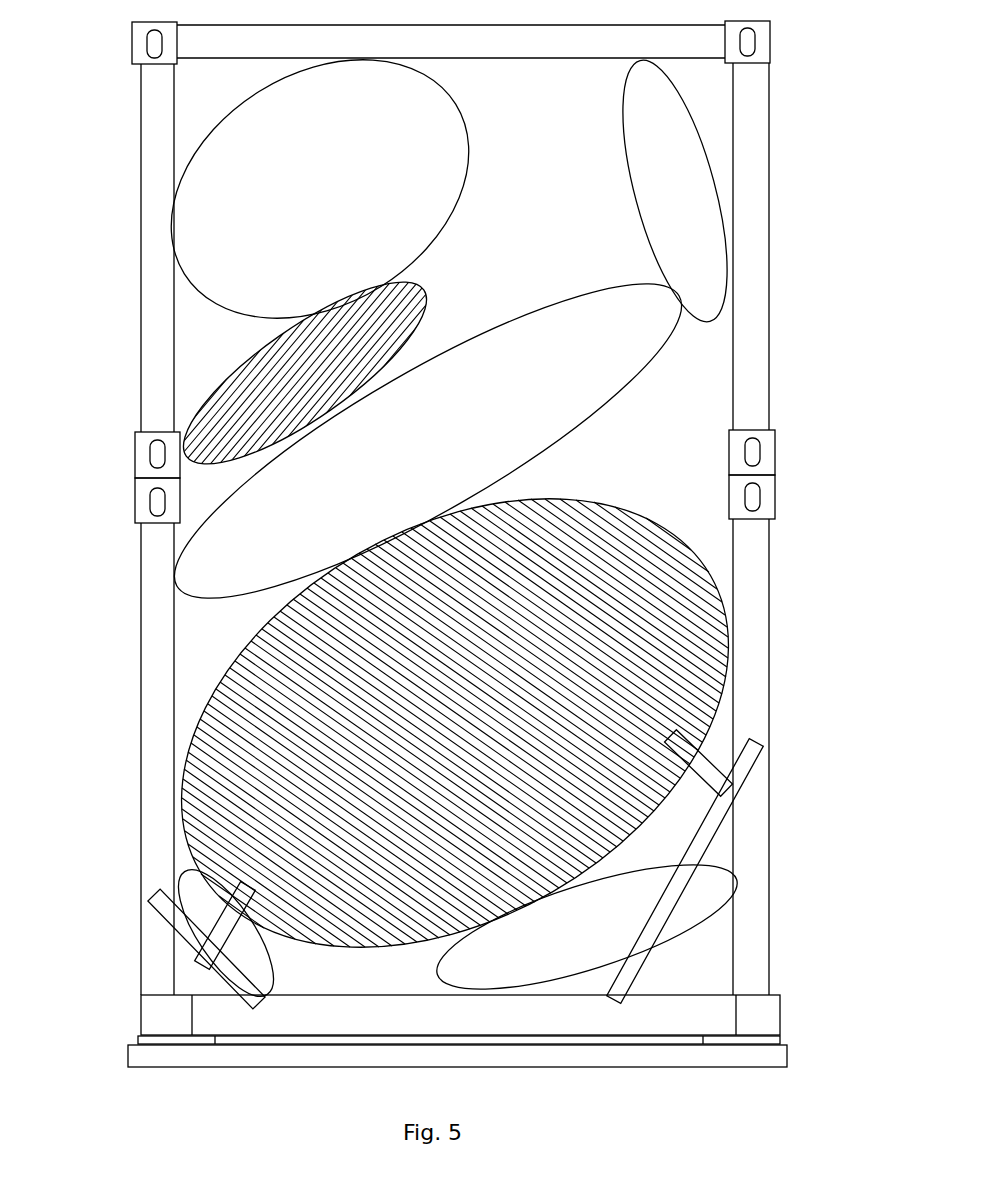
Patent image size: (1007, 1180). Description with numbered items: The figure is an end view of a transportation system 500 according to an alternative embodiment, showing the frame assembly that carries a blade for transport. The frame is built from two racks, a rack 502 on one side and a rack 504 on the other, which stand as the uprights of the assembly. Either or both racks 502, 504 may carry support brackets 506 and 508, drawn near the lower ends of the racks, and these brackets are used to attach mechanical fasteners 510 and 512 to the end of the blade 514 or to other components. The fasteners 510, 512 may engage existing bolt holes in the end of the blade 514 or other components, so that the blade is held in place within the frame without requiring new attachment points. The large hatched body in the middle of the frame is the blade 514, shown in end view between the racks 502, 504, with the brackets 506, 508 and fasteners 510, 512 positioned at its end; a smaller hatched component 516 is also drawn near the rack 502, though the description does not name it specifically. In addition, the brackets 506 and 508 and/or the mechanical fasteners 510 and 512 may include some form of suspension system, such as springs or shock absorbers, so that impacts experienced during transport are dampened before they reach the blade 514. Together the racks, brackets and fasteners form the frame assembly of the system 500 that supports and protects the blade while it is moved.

The system 500 is at (118, 362).
The rack 502 is at (141, 757).
The rack 504 is at (769, 388).
The support bracket 506 is at (245, 983).
The support bracket 508 is at (692, 875).
The mechanical fastener 510 is at (217, 924).
The mechanical fastener 512 is at (735, 792).
The blade 514 is at (733, 645).
The small cushion 516 is at (197, 410).